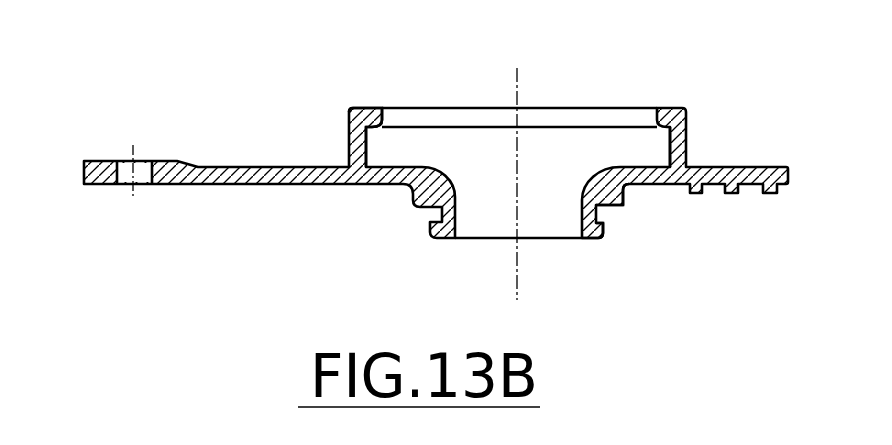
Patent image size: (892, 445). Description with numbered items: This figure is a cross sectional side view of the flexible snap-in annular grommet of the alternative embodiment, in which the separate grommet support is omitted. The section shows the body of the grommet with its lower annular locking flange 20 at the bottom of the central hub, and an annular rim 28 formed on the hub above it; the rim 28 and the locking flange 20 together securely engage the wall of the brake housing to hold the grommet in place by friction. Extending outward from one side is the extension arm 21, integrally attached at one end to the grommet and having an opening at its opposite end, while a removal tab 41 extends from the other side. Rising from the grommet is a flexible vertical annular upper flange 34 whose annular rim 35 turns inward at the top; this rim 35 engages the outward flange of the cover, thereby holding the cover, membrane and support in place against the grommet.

The extension arm 21 is at (253, 167).
The annular rim 35 is at (365, 108).
The flexible vertical annular upper flange 34 is at (672, 147).
The removal tab 41 is at (775, 166).
The annular rim 28 is at (622, 202).
The lower annular locking flange 20 is at (593, 240).